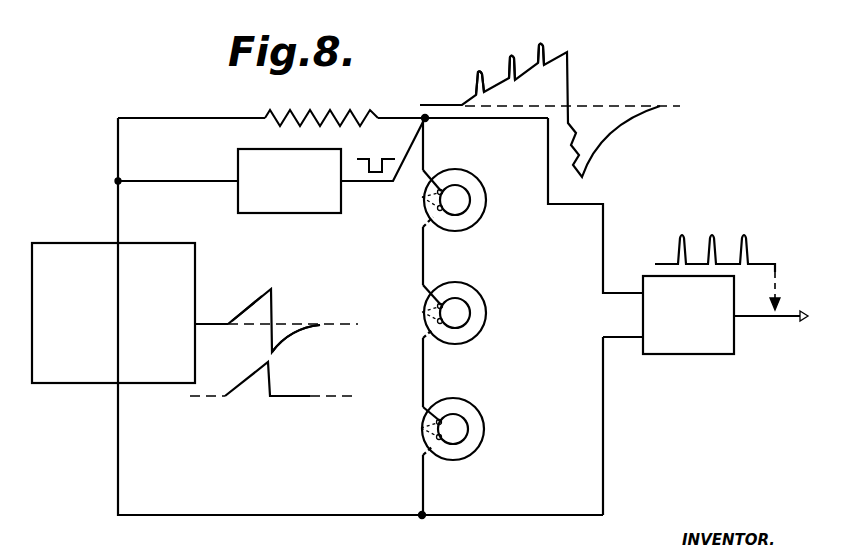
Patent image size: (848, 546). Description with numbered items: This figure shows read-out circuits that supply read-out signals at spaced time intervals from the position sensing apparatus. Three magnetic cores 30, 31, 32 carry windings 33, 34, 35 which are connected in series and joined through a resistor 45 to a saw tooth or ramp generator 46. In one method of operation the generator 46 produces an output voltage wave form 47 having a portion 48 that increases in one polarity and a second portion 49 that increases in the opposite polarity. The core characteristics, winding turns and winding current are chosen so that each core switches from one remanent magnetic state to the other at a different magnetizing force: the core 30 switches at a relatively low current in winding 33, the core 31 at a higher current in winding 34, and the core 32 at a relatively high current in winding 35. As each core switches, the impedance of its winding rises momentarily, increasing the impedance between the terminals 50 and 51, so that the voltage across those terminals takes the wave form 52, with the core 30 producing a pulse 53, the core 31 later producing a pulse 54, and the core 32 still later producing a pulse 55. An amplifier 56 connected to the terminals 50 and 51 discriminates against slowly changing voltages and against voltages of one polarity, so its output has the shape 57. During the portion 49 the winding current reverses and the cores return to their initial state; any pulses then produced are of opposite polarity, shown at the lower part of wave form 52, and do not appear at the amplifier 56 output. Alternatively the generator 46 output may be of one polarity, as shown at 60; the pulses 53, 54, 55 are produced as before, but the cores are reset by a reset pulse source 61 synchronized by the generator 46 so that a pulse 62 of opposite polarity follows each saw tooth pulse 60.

The core 30 is at (480, 193).
The core 31 is at (480, 306).
The core 32 is at (470, 429).
The winding 33 is at (422, 197).
The winding 34 is at (422, 312).
The winding 35 is at (421, 428).
The resistor 45 is at (322, 114).
The saw tooth or ramp generator 46 is at (148, 243).
The output voltage wave form 47 is at (276, 304).
The portion of wave form 48 is at (233, 316).
The second portion of wave form 49 is at (270, 341).
The terminal 50 is at (424, 116).
The terminal 51 is at (421, 514).
The wave form 52 is at (556, 52).
The pulse 53 is at (476, 74).
The pulse 54 is at (509, 60).
The pulse 55 is at (538, 48).
The amplifier 56 is at (684, 354).
The output voltage shape 57 is at (658, 264).
The saw tooth pulse 60 is at (276, 375).
The reset pulse source 61 is at (296, 213).
The pulse 62 is at (372, 159).